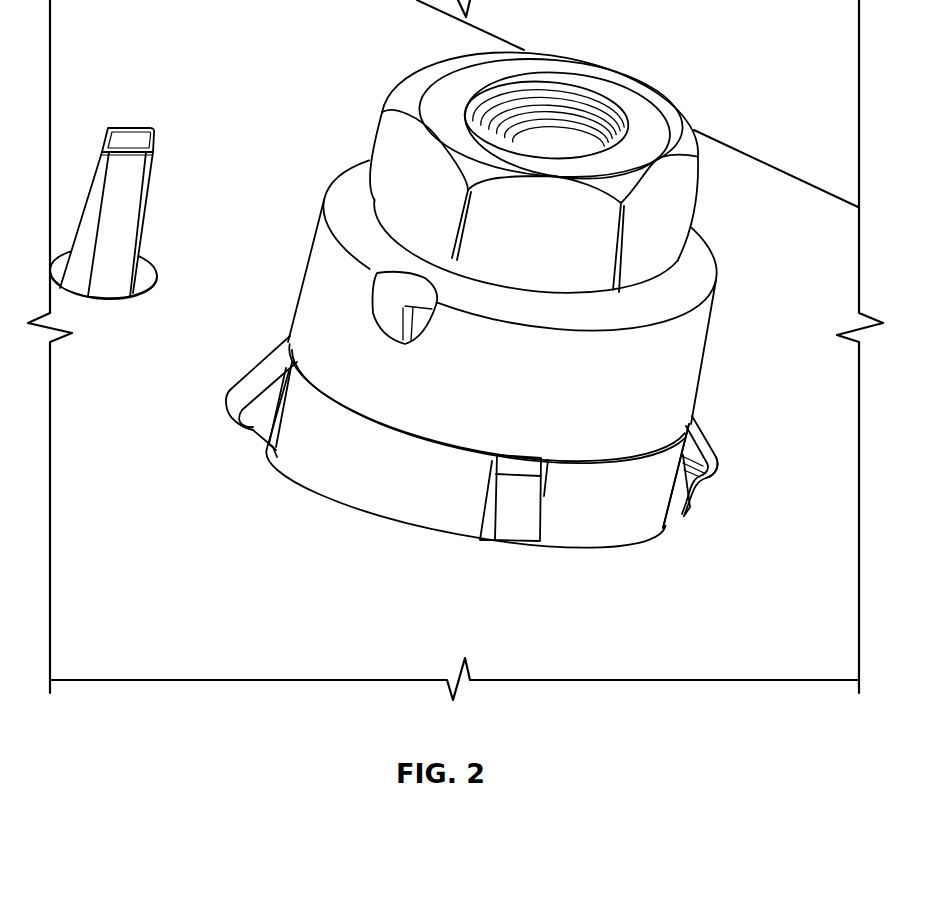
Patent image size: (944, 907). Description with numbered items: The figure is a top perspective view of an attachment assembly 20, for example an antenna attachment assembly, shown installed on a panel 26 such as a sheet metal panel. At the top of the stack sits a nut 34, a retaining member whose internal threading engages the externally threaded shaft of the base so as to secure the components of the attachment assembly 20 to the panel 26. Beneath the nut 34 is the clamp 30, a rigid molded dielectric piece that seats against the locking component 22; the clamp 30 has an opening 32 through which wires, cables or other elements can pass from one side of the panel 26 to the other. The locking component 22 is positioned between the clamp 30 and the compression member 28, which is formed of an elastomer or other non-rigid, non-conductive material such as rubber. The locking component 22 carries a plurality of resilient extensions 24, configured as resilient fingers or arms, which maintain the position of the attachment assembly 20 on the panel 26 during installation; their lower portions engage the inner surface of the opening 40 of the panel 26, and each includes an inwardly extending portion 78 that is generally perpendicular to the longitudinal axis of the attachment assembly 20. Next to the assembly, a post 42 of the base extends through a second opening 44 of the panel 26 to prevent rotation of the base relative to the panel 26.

The attachment assembly 20 is at (502, 326).
The locking component 22 is at (502, 470).
The resilient extensions 24 is at (243, 397).
The panel 26 is at (802, 257).
The compression member 28 is at (628, 527).
The clamp 30 is at (535, 310).
The opening 32 is at (430, 335).
The nut 34 is at (677, 212).
The opening 40 is at (678, 518).
The post 42 is at (150, 193).
The opening 44 is at (146, 272).
The inwardly extending portion 78 is at (725, 477).